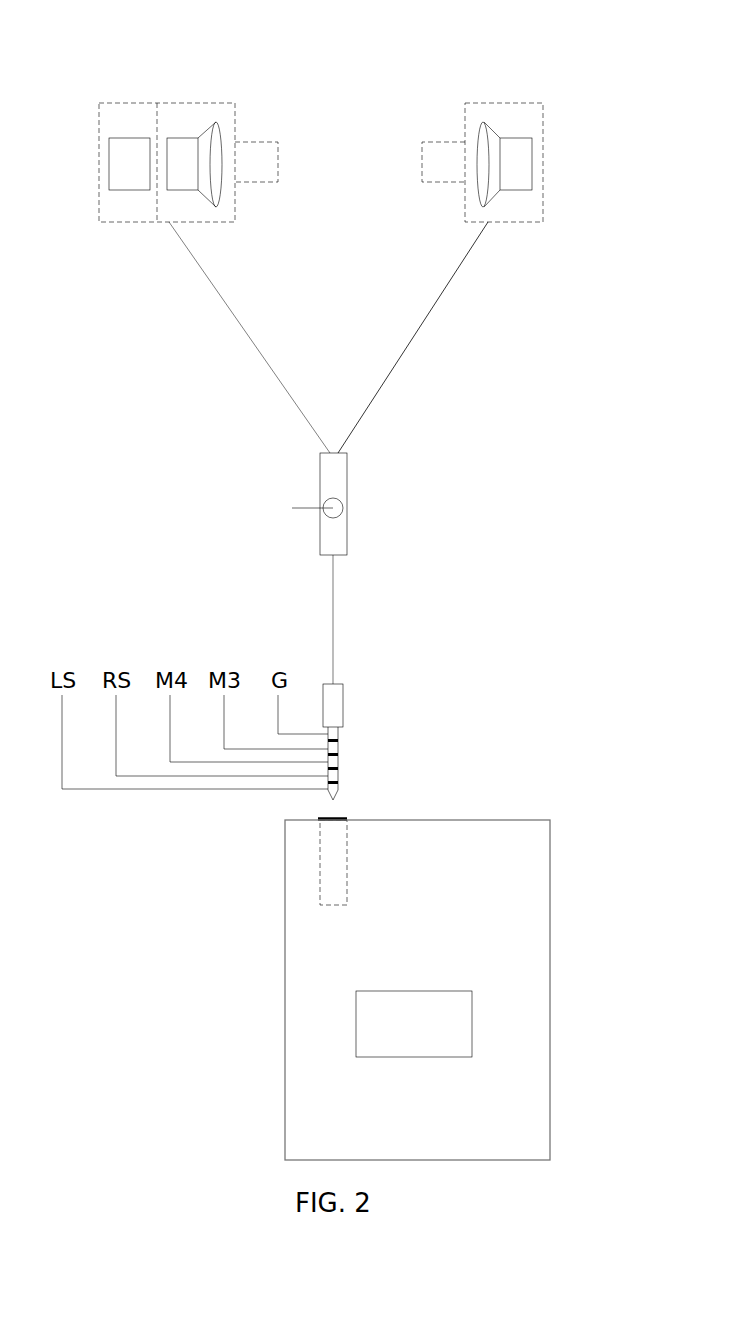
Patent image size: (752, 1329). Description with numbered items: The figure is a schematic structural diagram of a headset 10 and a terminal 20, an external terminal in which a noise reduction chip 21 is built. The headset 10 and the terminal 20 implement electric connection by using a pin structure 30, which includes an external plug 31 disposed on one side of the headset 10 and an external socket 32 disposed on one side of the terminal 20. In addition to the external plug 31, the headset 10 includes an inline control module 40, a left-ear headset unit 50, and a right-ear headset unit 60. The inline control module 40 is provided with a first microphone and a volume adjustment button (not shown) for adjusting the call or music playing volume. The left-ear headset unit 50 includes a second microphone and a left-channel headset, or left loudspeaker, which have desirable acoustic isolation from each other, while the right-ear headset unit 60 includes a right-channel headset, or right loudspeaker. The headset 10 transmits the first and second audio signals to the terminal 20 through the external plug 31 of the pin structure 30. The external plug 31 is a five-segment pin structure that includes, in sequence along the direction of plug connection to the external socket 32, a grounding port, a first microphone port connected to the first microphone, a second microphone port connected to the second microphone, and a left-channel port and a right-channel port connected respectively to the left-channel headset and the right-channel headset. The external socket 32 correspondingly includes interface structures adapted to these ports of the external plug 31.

The headset 10 is at (333, 88).
The terminal 20 is at (417, 990).
The noise reduction chip 21 is at (414, 1024).
The pin structure 30 is at (455, 702).
The external plug 31 is at (355, 714).
The external socket 32 is at (345, 810).
The inline control module 40 is at (352, 488).
The left-ear headset unit 50 is at (143, 222).
The right-ear headset unit 60 is at (535, 222).